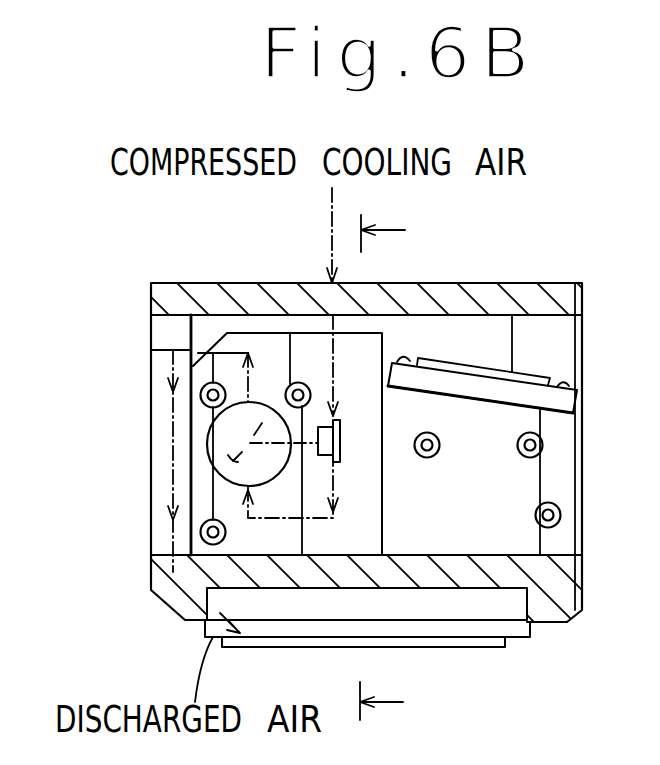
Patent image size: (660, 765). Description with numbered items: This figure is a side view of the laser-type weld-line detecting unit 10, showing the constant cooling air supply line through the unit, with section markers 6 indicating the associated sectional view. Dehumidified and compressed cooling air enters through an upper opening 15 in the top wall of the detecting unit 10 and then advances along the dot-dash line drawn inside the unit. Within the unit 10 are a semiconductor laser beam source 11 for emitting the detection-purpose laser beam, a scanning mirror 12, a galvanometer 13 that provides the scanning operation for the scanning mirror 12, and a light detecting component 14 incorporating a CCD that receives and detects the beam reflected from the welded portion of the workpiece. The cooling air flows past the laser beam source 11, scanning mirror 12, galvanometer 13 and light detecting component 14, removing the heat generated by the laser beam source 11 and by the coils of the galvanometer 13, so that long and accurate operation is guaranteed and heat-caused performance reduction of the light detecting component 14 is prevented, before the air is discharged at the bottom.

The section line 6- 6 is at (385, 458).
The laser-type weld-line detecting unit 10 is at (520, 283).
The semiconductor laser beam source 11 is at (342, 452).
The scanning mirror 12 is at (208, 443).
The galvanometer 13 is at (266, 406).
The light detecting component 14 is at (487, 440).
The upper opening 15 is at (333, 283).